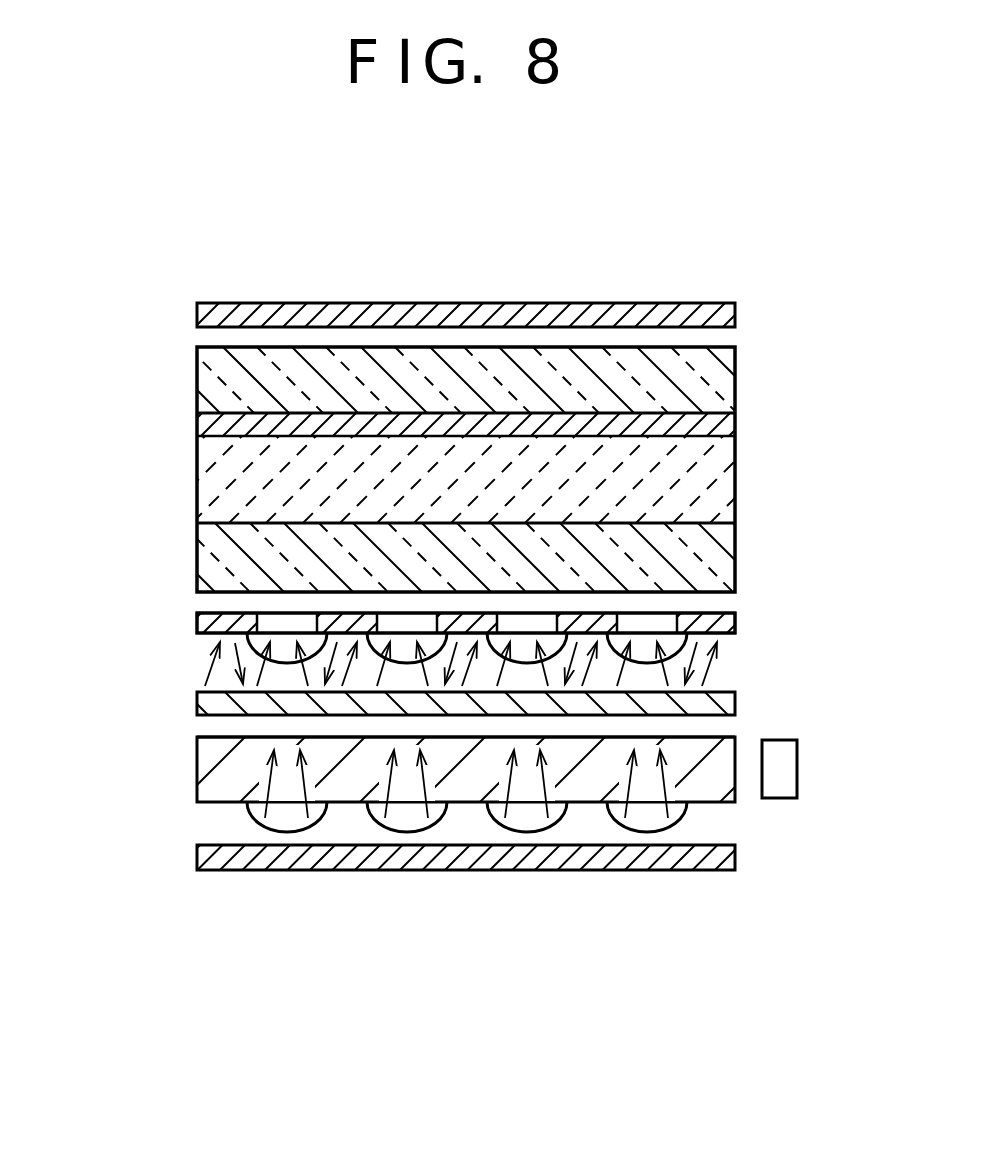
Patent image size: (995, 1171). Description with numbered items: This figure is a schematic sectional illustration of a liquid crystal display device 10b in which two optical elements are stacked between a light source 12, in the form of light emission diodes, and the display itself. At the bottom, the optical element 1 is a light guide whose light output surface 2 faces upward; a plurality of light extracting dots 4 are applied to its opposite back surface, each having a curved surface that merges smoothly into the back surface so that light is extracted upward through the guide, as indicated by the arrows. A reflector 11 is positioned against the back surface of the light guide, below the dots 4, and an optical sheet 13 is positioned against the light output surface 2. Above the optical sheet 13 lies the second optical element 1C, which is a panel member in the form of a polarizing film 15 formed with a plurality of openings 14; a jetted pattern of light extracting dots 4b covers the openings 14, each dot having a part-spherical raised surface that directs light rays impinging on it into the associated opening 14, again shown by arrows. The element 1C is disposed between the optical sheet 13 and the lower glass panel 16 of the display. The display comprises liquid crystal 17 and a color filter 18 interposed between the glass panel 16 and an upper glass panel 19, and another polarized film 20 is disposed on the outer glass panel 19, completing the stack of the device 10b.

The optical element 1 is at (174, 758).
The optical element 1C is at (174, 630).
The light output surface 2 is at (225, 737).
The light extracting dots 4 is at (247, 816).
The light extracting dots 4b is at (257, 650).
The liquid crystal display device 10b is at (174, 436).
The reflector 11 is at (458, 862).
The light source 12 is at (782, 768).
The optical sheet 13 is at (735, 705).
The openings 14 is at (290, 618).
The polarizing film 15 is at (735, 620).
The glass panel 16 is at (735, 553).
The liquid crystal 17 is at (197, 477).
The color filter 18 is at (735, 425).
The glass panel 19 is at (197, 374).
The polarized film 20 is at (515, 303).